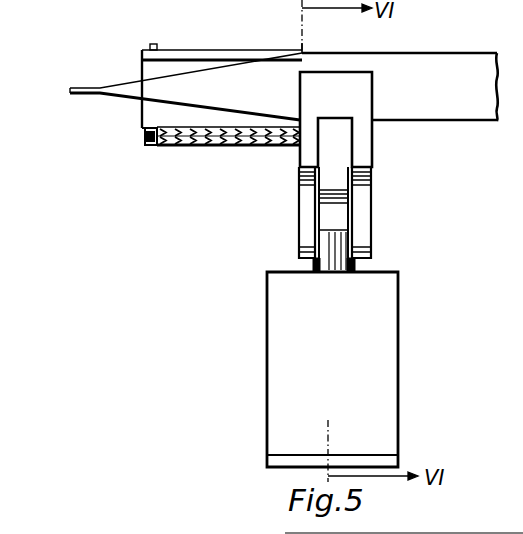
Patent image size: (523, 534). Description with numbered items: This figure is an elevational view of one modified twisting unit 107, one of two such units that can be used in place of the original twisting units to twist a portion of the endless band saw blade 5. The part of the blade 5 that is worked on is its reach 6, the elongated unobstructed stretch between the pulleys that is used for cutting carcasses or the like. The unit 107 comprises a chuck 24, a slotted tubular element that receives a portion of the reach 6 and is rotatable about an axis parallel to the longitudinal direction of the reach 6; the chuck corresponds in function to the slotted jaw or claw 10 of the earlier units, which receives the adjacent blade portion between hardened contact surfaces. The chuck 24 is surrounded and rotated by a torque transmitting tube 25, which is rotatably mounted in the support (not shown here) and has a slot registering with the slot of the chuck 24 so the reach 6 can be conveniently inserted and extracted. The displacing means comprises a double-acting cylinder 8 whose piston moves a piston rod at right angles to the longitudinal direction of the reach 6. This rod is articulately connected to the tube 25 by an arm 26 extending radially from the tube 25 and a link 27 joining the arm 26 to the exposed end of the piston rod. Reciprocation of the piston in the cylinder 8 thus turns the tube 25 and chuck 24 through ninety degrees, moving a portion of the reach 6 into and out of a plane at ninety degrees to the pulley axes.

The endless blade 5 is at (441, 90).
The reach 6 is at (478, 104).
The cylinder 8 is at (398, 395).
The jaw 10 is at (360, 96).
The chuck 24 is at (168, 148).
The torque transmitting tube 25 is at (235, 150).
The arm 26 is at (330, 152).
The link 27 is at (310, 208).
The modified twisting unit 107 is at (384, 183).